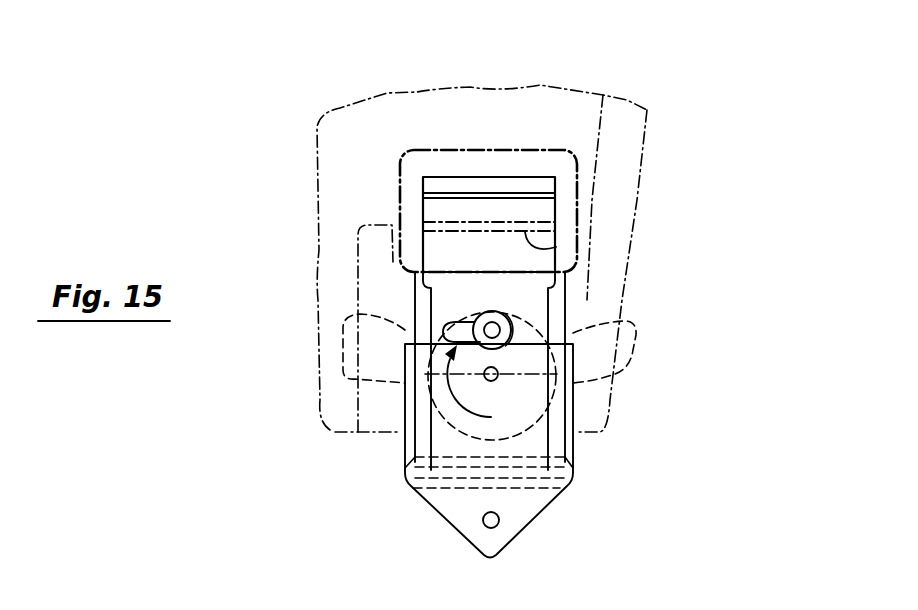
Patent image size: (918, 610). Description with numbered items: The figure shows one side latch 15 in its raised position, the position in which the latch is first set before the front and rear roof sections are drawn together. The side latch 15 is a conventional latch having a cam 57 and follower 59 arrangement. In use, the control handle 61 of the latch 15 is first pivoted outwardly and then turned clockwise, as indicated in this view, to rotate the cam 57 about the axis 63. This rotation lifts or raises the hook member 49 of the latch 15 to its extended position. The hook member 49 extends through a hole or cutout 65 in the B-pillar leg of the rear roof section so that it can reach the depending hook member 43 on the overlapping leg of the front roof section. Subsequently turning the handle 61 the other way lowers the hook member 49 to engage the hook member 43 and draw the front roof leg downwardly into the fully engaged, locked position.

The side latch 15 is at (711, 98).
The hook member 49 is at (505, 183).
The hook member 43 is at (556, 247).
The hole or cutout 65 is at (418, 150).
The control handle 61 is at (621, 348).
The follower 59 is at (466, 318).
The cam 57 is at (505, 320).
The axis 63 is at (496, 379).